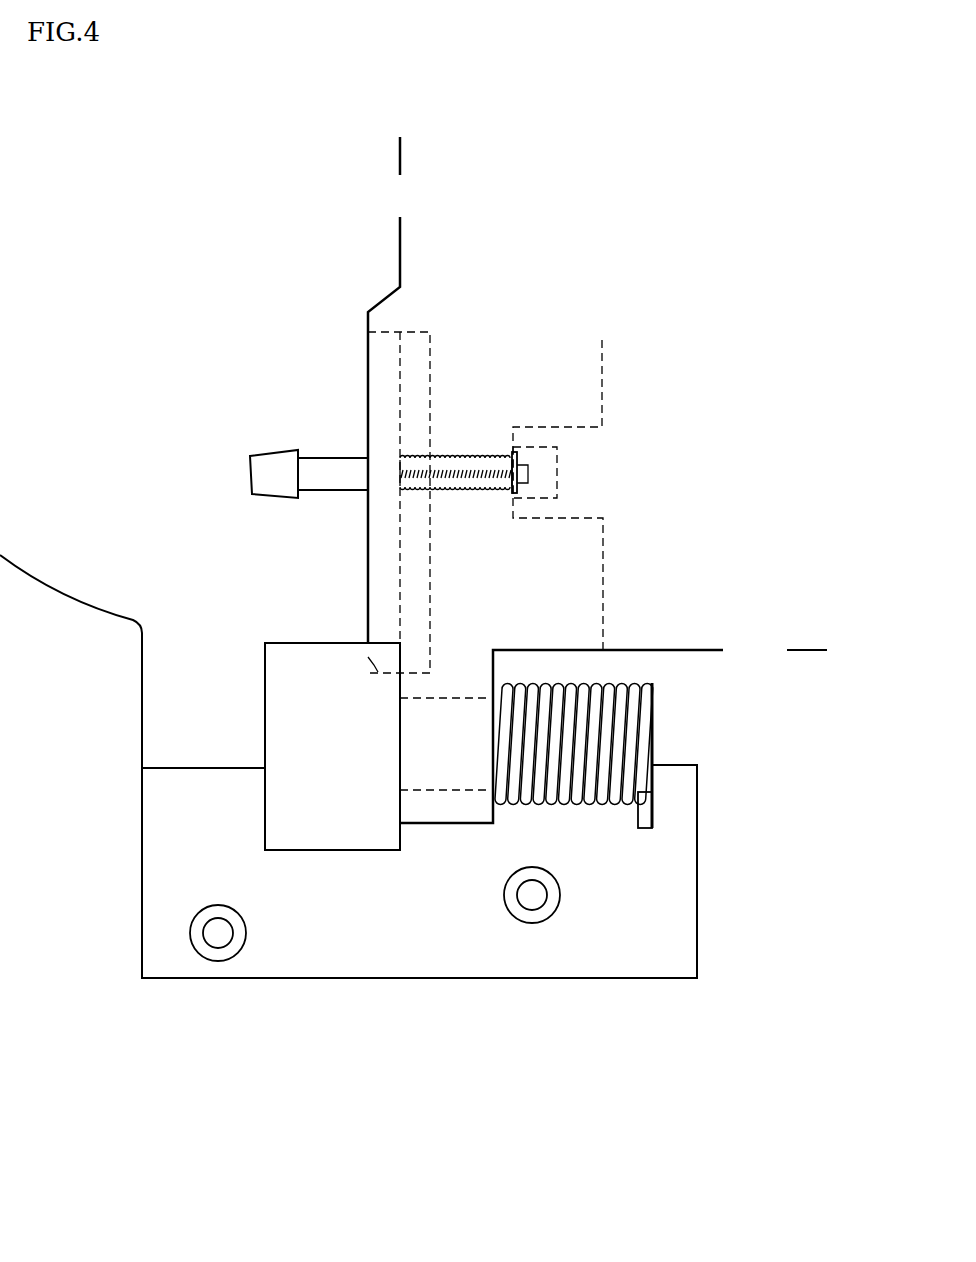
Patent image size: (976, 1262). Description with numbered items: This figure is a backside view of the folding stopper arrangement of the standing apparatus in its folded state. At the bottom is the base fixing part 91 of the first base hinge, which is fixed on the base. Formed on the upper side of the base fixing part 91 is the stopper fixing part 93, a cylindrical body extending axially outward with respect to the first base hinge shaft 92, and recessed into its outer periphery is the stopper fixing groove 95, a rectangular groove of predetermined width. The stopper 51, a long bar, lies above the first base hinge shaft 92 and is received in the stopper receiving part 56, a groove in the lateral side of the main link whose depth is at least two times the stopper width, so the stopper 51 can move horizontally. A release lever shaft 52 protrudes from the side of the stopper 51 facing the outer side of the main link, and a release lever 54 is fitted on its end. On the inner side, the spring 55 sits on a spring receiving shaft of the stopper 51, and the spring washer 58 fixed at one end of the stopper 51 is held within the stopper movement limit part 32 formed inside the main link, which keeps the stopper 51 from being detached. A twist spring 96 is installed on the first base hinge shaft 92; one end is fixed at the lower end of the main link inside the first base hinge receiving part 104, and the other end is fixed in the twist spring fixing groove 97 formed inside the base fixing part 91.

The stopper movement limit part 32 is at (558, 455).
The stopper 51 is at (380, 358).
The release lever shaft 52 is at (335, 430).
The release lever 54 is at (272, 430).
The spring 55 is at (463, 427).
The stopper receiving part 56 is at (413, 330).
The spring washer 58 is at (517, 472).
The base fixing part 91 is at (440, 945).
The first base hinge shaft 92 is at (648, 743).
The stopper fixing part 93 is at (323, 657).
The stopper fixing groove 95 is at (368, 673).
The twist spring 96 is at (652, 688).
The twist spring fixing groove 97 is at (652, 820).
The first base hinge receiving part 104 is at (483, 670).